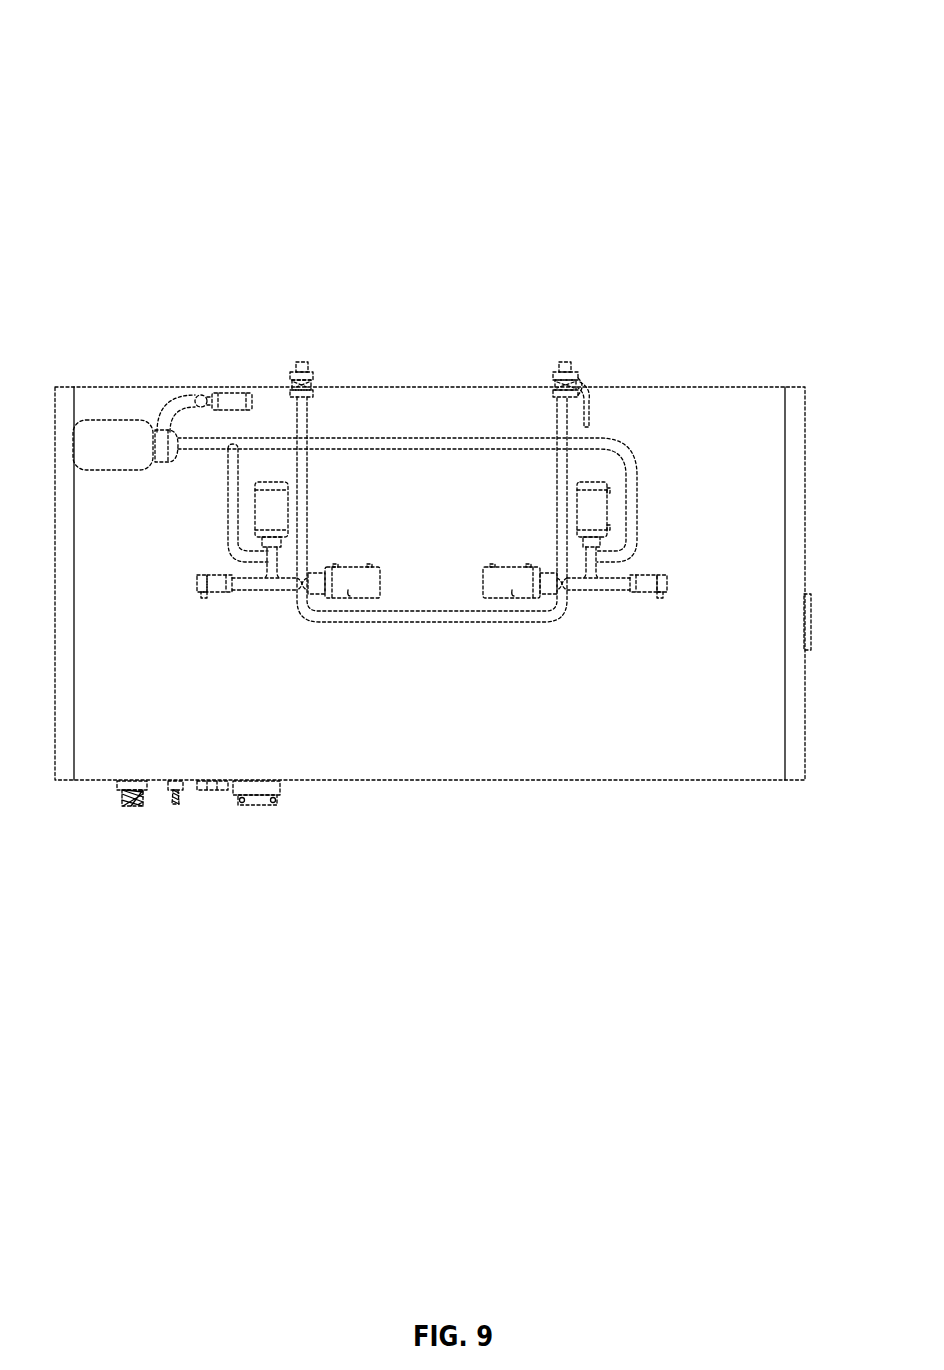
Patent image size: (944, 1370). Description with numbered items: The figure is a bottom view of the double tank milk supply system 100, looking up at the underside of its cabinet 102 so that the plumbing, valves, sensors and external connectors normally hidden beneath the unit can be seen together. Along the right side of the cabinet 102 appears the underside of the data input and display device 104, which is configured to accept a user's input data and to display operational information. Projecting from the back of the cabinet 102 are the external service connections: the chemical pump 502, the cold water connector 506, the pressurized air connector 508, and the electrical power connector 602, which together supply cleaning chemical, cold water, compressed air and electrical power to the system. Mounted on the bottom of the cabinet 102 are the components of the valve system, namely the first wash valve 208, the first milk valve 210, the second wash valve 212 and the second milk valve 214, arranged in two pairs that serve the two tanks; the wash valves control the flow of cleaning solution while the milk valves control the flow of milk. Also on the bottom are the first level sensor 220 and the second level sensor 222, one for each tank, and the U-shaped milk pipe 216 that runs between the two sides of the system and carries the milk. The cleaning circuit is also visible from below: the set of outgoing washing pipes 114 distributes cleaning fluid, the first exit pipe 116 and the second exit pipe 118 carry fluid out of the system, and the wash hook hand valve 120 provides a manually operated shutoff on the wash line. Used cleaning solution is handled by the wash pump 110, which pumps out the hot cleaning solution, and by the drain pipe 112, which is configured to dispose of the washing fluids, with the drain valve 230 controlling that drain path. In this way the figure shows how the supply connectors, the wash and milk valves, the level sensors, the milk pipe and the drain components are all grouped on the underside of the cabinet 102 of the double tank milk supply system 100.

The double tank milk supply system 100 is at (770, 60).
The cabinet 102 is at (750, 352).
The data input and display device 104 is at (812, 620).
The wash pump 110 is at (120, 437).
The drain pipe 112 is at (198, 387).
The drain valve 230 is at (230, 387).
The set of outgoing washing pipes 114 is at (453, 443).
The first exit pipe 116 is at (300, 362).
The second exit pipe 118 is at (560, 362).
The wash hook hand valve 120 is at (590, 413).
The U-shaped milk pipe 216 is at (310, 510).
The first wash valve 208 is at (262, 513).
The second wash valve 212 is at (597, 512).
The first milk valve 210 is at (345, 594).
The second milk valve 214 is at (513, 592).
The first level sensor 220 is at (215, 590).
The second level sensor 222 is at (645, 590).
The chemical pump 502 is at (255, 806).
The cold water connector 506 is at (131, 806).
The pressurized air connector 508 is at (178, 806).
The electrical power connector 602 is at (205, 792).